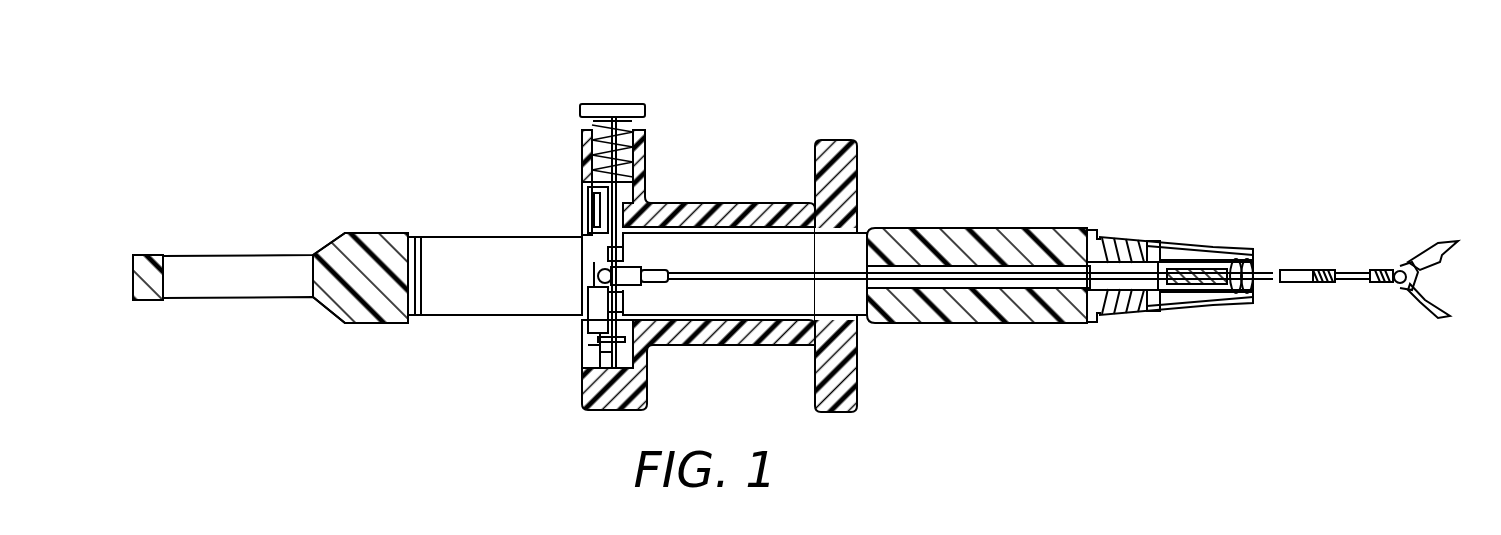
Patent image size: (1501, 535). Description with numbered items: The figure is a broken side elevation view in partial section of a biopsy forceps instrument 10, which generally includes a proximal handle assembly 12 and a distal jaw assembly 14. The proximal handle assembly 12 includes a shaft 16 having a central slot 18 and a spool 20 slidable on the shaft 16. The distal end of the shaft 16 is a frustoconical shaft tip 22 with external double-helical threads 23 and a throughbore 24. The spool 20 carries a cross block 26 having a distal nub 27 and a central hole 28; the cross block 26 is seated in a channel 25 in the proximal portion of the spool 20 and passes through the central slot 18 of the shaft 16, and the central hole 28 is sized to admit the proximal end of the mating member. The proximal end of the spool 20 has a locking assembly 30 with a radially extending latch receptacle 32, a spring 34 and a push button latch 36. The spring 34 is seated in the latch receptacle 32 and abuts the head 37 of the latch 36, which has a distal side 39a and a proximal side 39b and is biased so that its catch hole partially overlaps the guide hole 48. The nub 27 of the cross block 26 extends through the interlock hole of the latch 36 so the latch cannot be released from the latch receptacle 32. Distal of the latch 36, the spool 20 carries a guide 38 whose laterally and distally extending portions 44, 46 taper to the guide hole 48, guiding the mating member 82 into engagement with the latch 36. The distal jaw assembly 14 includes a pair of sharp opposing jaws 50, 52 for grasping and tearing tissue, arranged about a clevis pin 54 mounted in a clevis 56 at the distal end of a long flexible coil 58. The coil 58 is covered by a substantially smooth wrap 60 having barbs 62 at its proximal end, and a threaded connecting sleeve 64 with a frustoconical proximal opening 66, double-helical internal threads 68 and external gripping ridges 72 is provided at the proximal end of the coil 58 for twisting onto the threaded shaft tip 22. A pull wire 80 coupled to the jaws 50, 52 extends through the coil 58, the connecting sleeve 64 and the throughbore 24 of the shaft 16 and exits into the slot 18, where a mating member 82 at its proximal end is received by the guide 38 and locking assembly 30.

The biopsy forceps instrument 10 is at (628, 85).
The proximal handle assembly 12 is at (955, 362).
The distal jaw assembly 14 is at (1392, 298).
The shaft 16 is at (912, 228).
The central slot 18 is at (432, 245).
The spool 20 is at (840, 383).
The frustoconical shaft tip 22 is at (1093, 230).
The external double-helical threads 23 is at (1135, 312).
The throughbore 24 is at (1060, 285).
The channel 25 is at (592, 345).
The cross block 26 is at (590, 335).
The distal nub 27 is at (600, 352).
The central hole 28 is at (588, 300).
The locking assembly 30 is at (574, 266).
The latch receptacle 32 is at (622, 156).
The spring 34 is at (590, 152).
The push button latch 36 is at (612, 130).
The head 37 is at (585, 108).
The guide 38 is at (630, 310).
The distal side 39a is at (625, 355).
The proximal side 39b is at (605, 203).
The laterally extending portion 44 is at (637, 235).
The distally extending portion 46 is at (630, 300).
The guide hole 48 is at (645, 266).
The jaw 50 is at (1435, 245).
The jaw 52 is at (1442, 318).
The clevis pin 54 is at (1418, 282).
The clevis 56 is at (1396, 268).
The flexible coil 58 is at (1322, 268).
The wrap 60 is at (1258, 262).
The barbs 62 is at (1250, 303).
The threaded connecting sleeve 64 is at (1160, 250).
The frustoconical proximal opening 66 is at (1120, 235).
The internal threads 68 is at (1135, 240).
The external gripping ridges 72 is at (1220, 247).
The pull wire 80 is at (945, 265).
The mating member 82 is at (660, 282).